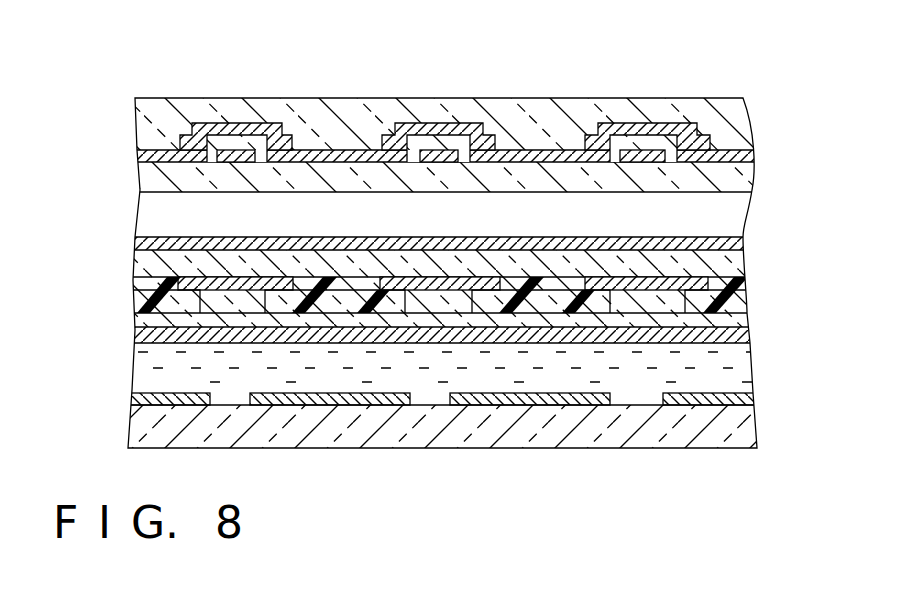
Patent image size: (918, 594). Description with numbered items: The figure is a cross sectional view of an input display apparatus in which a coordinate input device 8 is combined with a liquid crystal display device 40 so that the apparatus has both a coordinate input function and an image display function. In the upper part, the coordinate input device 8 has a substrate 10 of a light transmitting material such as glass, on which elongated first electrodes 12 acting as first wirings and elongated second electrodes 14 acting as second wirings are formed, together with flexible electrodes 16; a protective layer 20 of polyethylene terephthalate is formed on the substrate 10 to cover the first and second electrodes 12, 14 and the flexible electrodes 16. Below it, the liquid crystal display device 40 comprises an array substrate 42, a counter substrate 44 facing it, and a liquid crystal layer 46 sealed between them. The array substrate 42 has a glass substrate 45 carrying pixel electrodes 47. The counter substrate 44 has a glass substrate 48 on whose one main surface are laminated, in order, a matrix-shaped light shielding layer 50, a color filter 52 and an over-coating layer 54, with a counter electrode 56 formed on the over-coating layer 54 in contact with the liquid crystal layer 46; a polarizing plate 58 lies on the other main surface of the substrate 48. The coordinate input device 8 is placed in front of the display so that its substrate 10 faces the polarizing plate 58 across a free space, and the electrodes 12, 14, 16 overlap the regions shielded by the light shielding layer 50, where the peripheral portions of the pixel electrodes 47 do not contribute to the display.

The coordinate input device 8 is at (162, 92).
The substrate 10 is at (148, 183).
The first electrodes 12 is at (233, 160).
The second electrodes 14 is at (138, 157).
The flexible electrodes 16 is at (240, 123).
The protective layer 20 is at (553, 118).
The liquid crystal display device 40 is at (768, 332).
The array substrate 42 is at (115, 422).
The counter substrate 44 is at (112, 300).
The substrate 45 is at (750, 428).
The liquid crystal layer 46 is at (132, 375).
The pixel electrodes 47 is at (342, 400).
The substrate 48 is at (718, 268).
The light shielding layer 50 is at (418, 282).
The color filter 52 is at (132, 280).
The over-coating layer 54 is at (132, 325).
The counter electrode 56 is at (712, 344).
The polarizing plate 58 is at (133, 242).